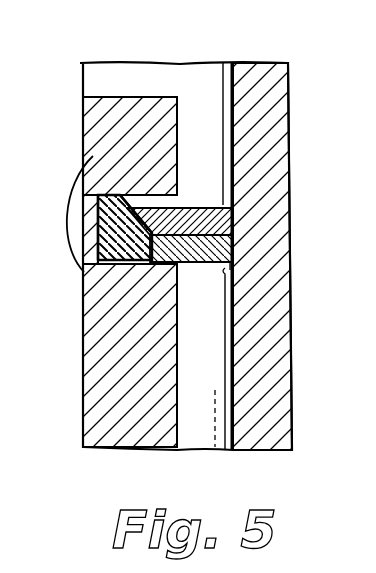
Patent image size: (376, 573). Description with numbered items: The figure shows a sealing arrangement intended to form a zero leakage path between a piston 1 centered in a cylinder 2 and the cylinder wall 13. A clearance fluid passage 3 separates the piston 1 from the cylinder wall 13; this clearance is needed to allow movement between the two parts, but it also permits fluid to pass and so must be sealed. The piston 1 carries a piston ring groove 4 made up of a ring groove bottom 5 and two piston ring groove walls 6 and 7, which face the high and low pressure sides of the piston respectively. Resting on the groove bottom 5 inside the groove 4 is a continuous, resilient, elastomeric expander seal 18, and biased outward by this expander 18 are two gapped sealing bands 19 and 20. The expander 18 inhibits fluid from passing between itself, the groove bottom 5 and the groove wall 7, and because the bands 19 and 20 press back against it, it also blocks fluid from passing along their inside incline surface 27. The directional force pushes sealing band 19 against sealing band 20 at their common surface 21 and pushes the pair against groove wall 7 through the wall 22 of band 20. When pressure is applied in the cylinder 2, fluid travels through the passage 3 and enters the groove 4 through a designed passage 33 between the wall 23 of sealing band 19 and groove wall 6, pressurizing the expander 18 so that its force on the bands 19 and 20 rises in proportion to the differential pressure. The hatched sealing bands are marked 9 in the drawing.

The piston 1 is at (101, 333).
The cylinder 2 is at (156, 72).
The fluid passage 3 is at (215, 381).
The piston ring groove 4 is at (98, 222).
The ring groove bottom 5 is at (100, 196).
The piston ring groove wall 6 is at (84, 160).
The piston ring groove wall 7 is at (101, 284).
The sealing strip 9 is at (235, 217).
The cylinder wall 13 is at (282, 84).
The expander seal 18 is at (98, 253).
The sealing band 19 is at (238, 209).
The sealing band 20 is at (195, 262).
The common surface 21 is at (238, 250).
The wall of sealing band 22 is at (232, 273).
The sealing band wall 23 is at (195, 157).
The inside incline surface 27 is at (137, 213).
The passage 33 is at (186, 104).